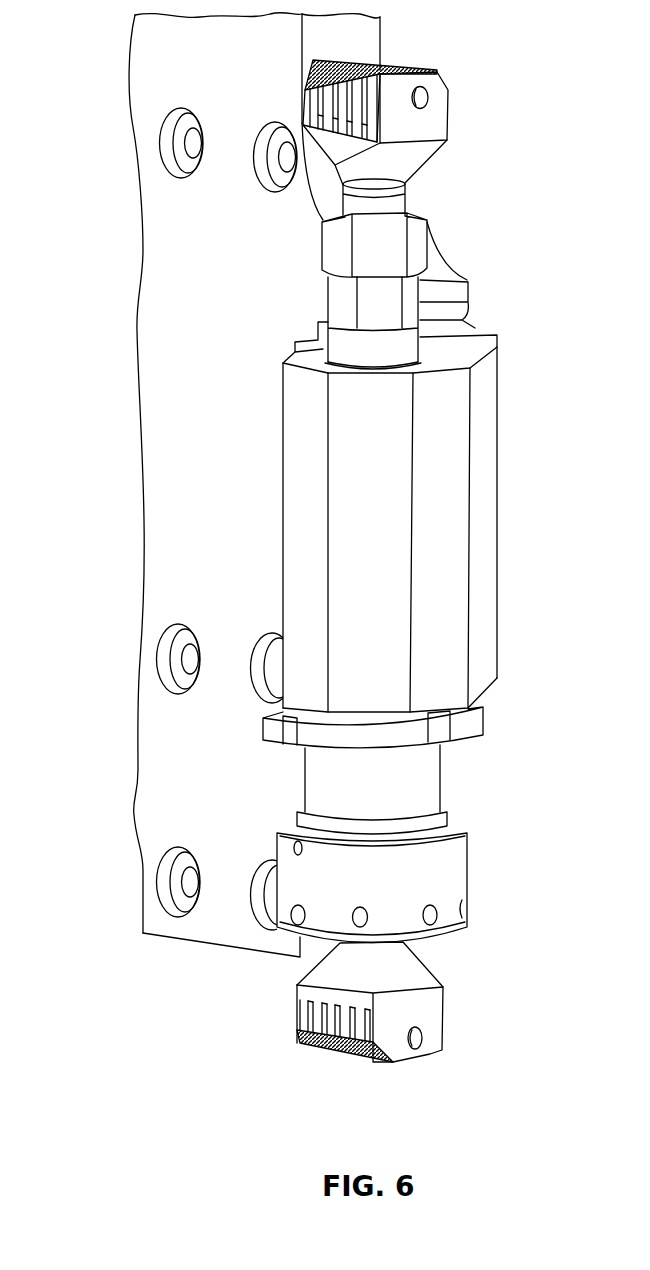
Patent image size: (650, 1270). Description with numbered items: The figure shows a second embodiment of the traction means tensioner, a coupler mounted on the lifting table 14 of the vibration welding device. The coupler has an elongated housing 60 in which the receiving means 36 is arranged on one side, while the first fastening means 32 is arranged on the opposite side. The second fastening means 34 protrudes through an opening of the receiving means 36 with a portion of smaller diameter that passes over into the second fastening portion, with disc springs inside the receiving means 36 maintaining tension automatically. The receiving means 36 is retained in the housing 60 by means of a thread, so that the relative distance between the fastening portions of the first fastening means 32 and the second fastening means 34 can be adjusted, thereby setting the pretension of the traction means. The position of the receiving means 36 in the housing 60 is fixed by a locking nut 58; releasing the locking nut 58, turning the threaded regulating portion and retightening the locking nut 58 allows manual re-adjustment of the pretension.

The lifting table 14 is at (173, 332).
The first fastening means 32 is at (428, 117).
The second fastening means 34 is at (423, 1010).
The receiving means 36 is at (430, 780).
The locking nut 58 is at (470, 725).
The housing 60 is at (438, 468).